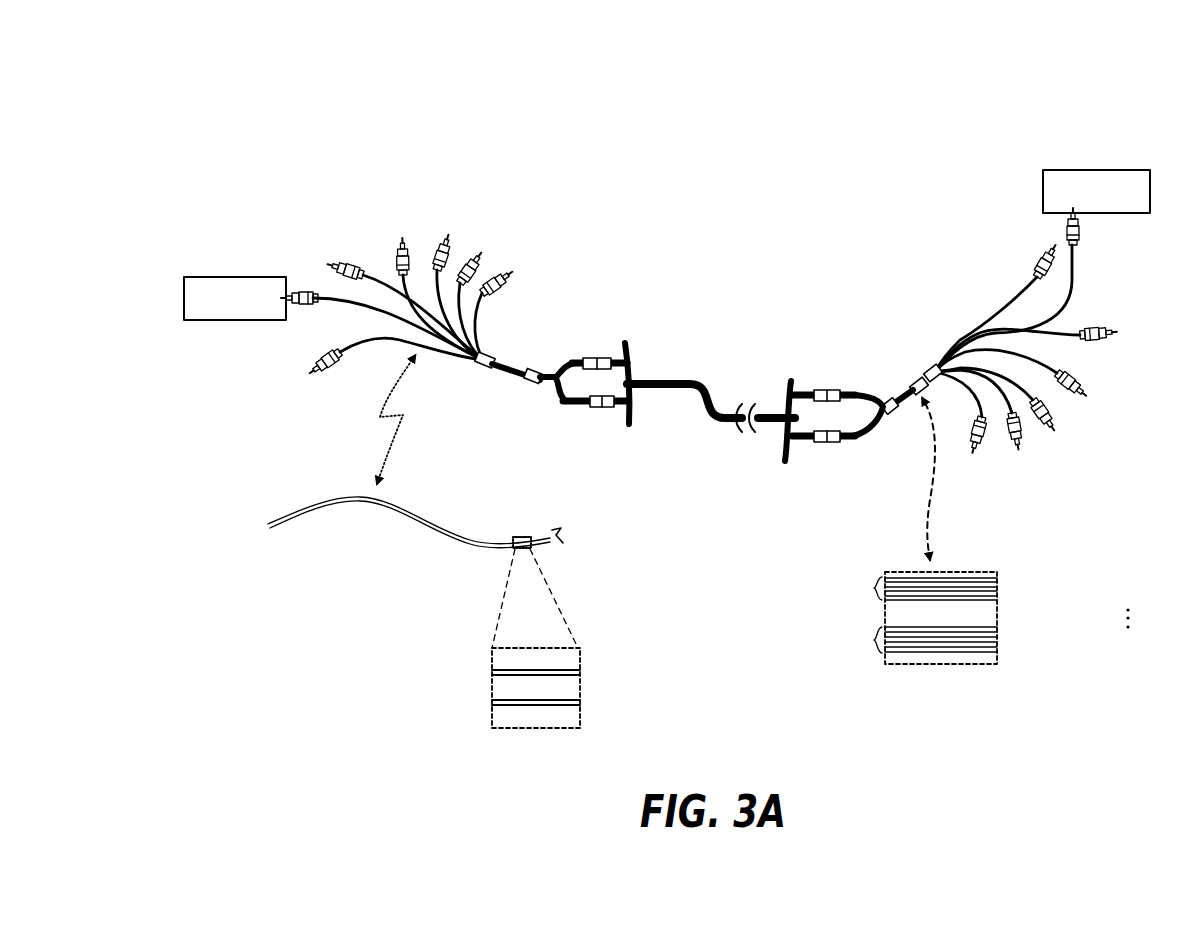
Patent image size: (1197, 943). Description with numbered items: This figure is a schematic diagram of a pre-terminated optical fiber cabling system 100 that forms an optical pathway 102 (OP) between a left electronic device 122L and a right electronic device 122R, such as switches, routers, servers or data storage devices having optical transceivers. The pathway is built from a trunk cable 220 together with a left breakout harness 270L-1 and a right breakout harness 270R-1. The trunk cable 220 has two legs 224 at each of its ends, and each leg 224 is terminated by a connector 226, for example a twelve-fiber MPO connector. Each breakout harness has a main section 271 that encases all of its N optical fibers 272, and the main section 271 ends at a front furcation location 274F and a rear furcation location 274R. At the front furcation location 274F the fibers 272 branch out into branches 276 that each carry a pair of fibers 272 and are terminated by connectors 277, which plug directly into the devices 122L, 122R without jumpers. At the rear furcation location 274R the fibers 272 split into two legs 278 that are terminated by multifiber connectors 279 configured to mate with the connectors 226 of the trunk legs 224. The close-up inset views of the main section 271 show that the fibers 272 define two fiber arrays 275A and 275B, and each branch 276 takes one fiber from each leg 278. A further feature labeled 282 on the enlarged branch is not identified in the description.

The pre-terminated optical fiber cabling system 100 is at (324, 106).
The optical probe 102 is at (726, 190).
The left electronic device 122L is at (251, 298).
The right electronic device 122R is at (1096, 207).
The trunk cable 220 is at (675, 372).
The leg 224 is at (620, 357).
The connector 226 is at (596, 357).
The left breakout harness 270L-1 is at (530, 248).
The right breakout harness 270R-1 is at (877, 316).
The main section 271 is at (522, 370).
The optical fiber 272 is at (272, 576).
The front furcation location 274F is at (487, 368).
The rear furcation location 274R is at (531, 378).
The first fiber array 275A is at (847, 591).
The second fiber array 275B is at (847, 641).
The branch 276 is at (404, 207).
The connector 277 is at (343, 262).
The leg 278 is at (573, 402).
The multifiber connector 279 is at (586, 358).
The fiber jacket 282 is at (433, 525).